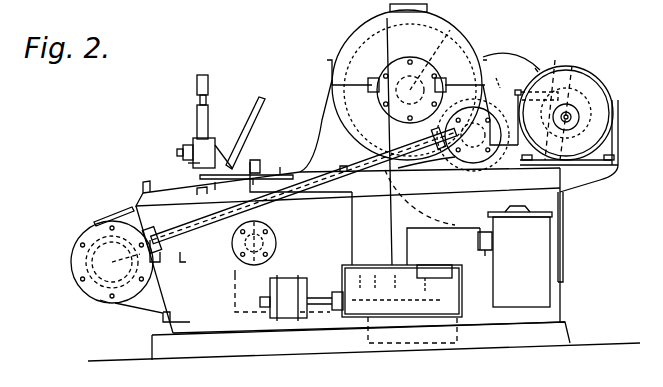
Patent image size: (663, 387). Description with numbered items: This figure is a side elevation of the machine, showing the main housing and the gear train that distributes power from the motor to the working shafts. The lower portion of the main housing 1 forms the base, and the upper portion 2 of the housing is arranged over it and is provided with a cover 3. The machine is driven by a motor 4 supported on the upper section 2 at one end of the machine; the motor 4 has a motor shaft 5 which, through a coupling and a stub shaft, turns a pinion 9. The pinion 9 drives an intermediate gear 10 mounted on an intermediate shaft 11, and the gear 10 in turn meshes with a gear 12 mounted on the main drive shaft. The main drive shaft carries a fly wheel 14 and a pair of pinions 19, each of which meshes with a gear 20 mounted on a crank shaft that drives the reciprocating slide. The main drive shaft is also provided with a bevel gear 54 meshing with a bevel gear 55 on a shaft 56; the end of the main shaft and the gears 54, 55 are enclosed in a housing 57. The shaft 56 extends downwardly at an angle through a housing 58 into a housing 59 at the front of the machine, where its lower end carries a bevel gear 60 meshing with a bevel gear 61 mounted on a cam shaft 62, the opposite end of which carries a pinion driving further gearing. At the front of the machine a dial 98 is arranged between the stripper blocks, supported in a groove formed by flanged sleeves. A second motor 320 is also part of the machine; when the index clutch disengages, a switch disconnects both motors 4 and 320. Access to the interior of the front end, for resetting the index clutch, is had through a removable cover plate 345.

The lower portion of the main housing 1 is at (565, 306).
The upper portion of the housing 2 is at (320, 117).
The cover 3 is at (470, 45).
The motor 4 is at (618, 122).
The motor shaft 5 is at (574, 114).
The pinion 9 is at (592, 66).
The intermediate gear 10 is at (562, 61).
The intermediate shaft 11 is at (537, 66).
The gear 12 is at (500, 84).
The fly wheel 14 is at (505, 46).
The pinions 19 is at (491, 186).
The gear 20 is at (451, 30).
The bevel gear 54 is at (447, 183).
The bevel gear 55 is at (517, 92).
The shaft 56 is at (342, 176).
The housing 57 is at (478, 168).
The housing 58 is at (180, 256).
The housing 59 is at (96, 302).
The bevel gear 60 is at (150, 238).
The bevel gear 61 is at (78, 294).
The cam shaft 62 is at (72, 256).
The dial 98 is at (272, 258).
The motor 320 is at (292, 320).
The removable cover plate 345 is at (105, 214).